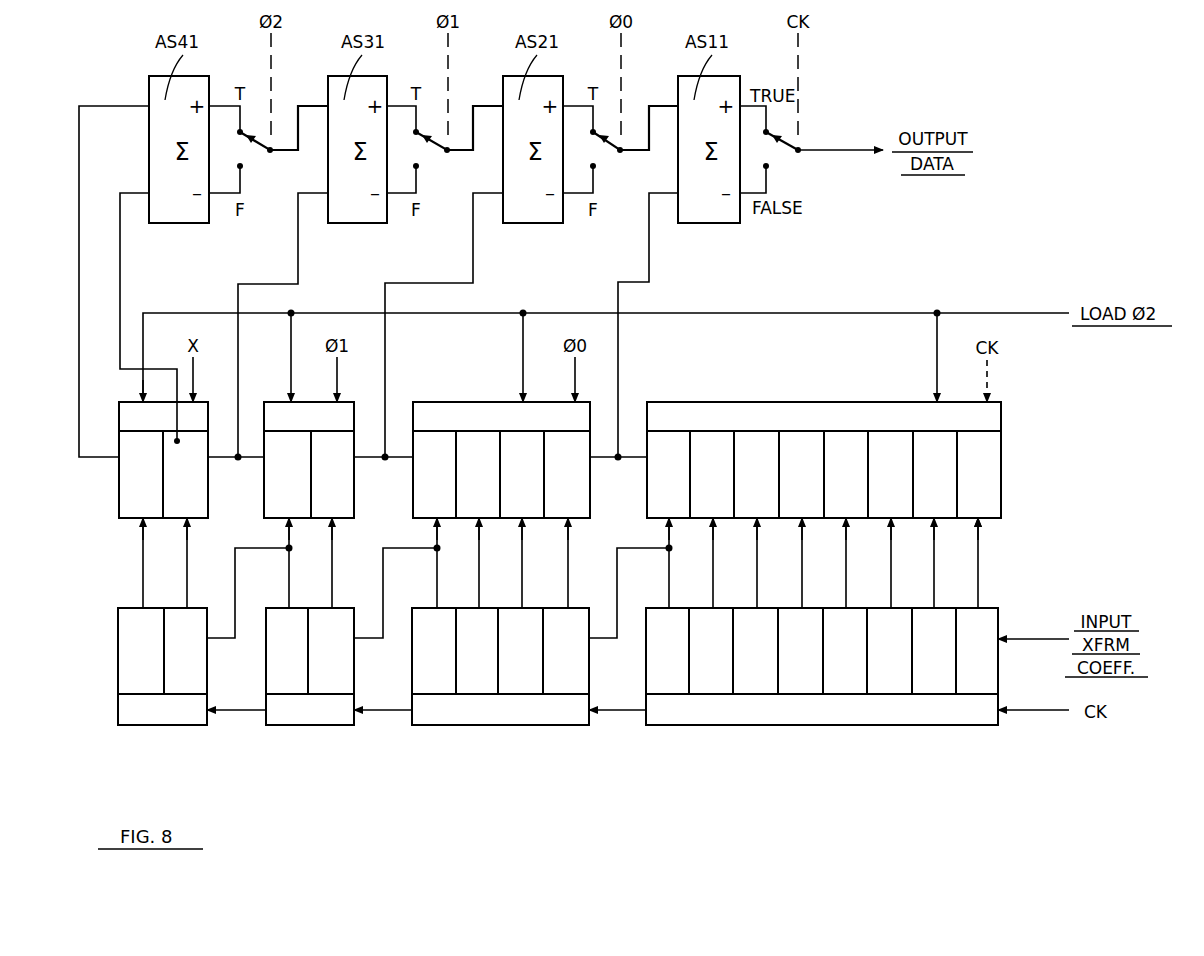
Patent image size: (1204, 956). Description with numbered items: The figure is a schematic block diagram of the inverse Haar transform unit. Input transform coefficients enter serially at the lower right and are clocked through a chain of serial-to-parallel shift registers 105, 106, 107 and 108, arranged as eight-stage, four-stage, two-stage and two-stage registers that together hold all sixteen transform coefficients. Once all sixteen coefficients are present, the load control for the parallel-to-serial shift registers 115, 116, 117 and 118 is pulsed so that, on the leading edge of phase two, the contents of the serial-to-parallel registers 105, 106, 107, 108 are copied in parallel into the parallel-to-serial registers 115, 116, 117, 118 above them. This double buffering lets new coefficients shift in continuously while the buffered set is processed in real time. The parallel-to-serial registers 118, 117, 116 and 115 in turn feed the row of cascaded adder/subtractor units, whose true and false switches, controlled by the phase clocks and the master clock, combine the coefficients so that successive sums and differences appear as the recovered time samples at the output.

The serial-to-parallel shift register 105 is at (793, 727).
The serial-to-parallel shift register 106 is at (467, 727).
The serial-to-parallel shift register 107 is at (282, 727).
The serial-to-parallel shift register 108 is at (145, 727).
The parallel-to-serial shift register 115 is at (1001, 423).
The parallel-to-serial shift register 116 is at (430, 412).
The parallel-to-serial shift register 117 is at (338, 415).
The parallel-to-serial shift register 118 is at (195, 415).